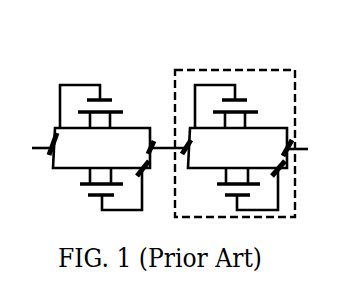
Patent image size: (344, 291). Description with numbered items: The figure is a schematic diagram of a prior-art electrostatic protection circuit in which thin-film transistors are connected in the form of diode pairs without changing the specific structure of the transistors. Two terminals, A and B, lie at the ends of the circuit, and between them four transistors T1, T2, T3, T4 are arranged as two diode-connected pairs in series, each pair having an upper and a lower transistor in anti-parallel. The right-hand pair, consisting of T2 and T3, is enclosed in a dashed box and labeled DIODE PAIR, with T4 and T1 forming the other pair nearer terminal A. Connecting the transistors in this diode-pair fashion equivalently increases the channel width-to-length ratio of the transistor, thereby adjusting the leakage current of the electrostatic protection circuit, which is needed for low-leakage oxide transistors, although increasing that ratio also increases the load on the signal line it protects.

The diode T1 is at (97, 188).
The diode T2 is at (233, 188).
The diode T3 is at (242, 103).
The diode T4 is at (104, 104).
The terminal A is at (38, 132).
The terminal B is at (298, 135).
The diode pair DIODE PAIR is at (235, 70).